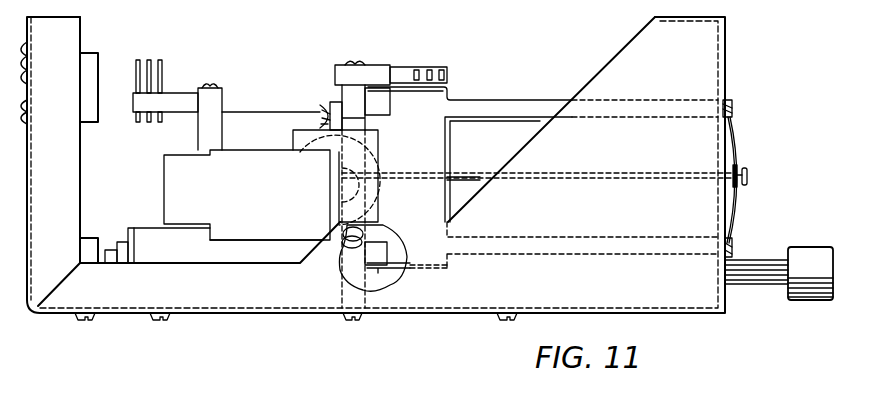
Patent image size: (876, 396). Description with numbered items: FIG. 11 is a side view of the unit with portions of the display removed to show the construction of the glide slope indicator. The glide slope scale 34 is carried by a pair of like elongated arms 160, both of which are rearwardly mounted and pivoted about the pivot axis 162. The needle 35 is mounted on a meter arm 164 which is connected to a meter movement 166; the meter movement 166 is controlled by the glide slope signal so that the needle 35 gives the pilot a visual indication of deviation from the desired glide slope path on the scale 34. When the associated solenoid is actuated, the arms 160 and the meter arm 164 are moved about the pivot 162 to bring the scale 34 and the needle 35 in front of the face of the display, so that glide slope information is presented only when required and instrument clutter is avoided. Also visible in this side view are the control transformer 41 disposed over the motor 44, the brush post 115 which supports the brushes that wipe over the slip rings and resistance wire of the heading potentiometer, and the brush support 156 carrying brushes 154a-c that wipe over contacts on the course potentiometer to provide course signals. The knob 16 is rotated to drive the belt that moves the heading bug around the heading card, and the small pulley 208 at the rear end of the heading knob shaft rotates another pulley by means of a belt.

The knob 16 is at (810, 255).
The glide slope scale 34 is at (733, 122).
The needle 35 is at (749, 175).
The control transformer 41 is at (277, 216).
The motor 44 is at (182, 256).
The brush post 115 is at (412, 72).
The terminal pins 154a-c is at (138, 62).
The brush support 156 is at (177, 100).
The elongated arm 160 is at (527, 107).
The pivot 162 is at (380, 93).
The meter arm 164 is at (470, 177).
The meter movement 166 is at (325, 108).
The small pulley 208 is at (108, 250).